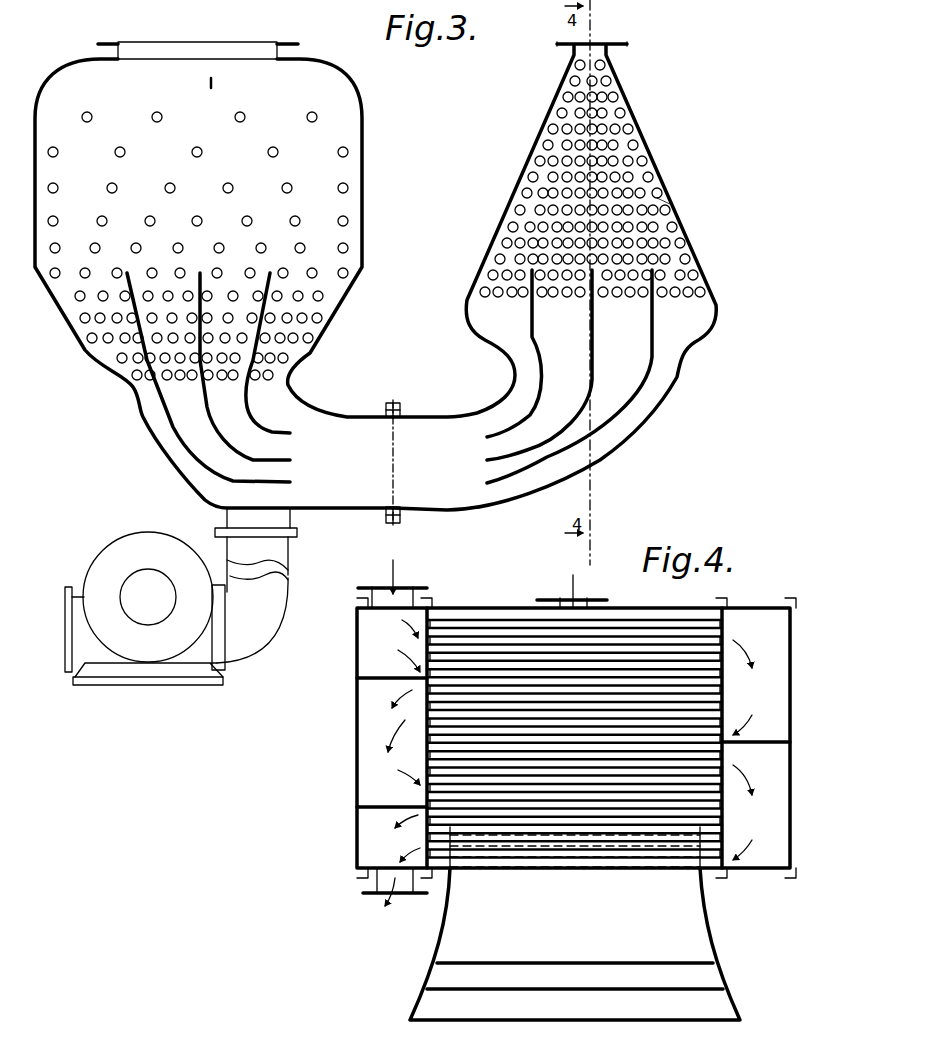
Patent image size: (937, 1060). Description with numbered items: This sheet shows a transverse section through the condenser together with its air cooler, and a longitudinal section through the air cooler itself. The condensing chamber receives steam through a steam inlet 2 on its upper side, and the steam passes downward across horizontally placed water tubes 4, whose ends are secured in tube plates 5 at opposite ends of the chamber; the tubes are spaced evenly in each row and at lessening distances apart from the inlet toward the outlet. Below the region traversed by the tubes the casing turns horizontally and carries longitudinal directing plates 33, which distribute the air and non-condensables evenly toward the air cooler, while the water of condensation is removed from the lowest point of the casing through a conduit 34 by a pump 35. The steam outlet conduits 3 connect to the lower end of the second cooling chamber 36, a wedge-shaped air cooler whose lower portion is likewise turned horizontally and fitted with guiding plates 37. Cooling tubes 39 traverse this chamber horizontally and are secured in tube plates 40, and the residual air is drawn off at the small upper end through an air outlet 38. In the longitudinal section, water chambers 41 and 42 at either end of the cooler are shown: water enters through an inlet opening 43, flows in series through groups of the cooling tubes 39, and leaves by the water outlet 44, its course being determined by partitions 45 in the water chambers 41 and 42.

In FIG. 3, the steam inlet 2 is at (190, 48).
In FIG. 3, the steam outlet conduits 3 is at (372, 462).
In FIG. 3, the water tubes 4 is at (289, 182).
In FIG. 3, the tube plates 5 is at (334, 101).
In FIG. 3, the longitudinal directing plates 33 is at (135, 297).
In FIG. 3, the conduit 34 is at (282, 556).
In FIG. 3, the pump 35 is at (118, 565).
In FIG. 3, the second cooling chamber 36 is at (713, 327).
In FIG. 4, the second cooling chamber 36 is at (483, 607).
In FIG. 3, the guiding plates 37 is at (590, 382).
In FIG. 4, the guiding plates 37 is at (590, 990).
In FIG. 3, the air outlet 38 is at (596, 46).
In FIG. 4, the air outlet 38 is at (580, 606).
In FIG. 3, the cooling tubes 39 is at (660, 193).
In FIG. 4, the cooling tubes 39 is at (635, 665).
In FIG. 3, the tube plates 40 is at (658, 203).
In FIG. 4, the tube plates 40 is at (723, 628).
In FIG. 4, the water chamber 41 is at (376, 739).
In FIG. 4, the water chamber 42 is at (775, 700).
In FIG. 4, the inlet opening 43 is at (385, 588).
In FIG. 4, the water outlet 44 is at (397, 885).
In FIG. 4, the partitions 45 is at (380, 681).